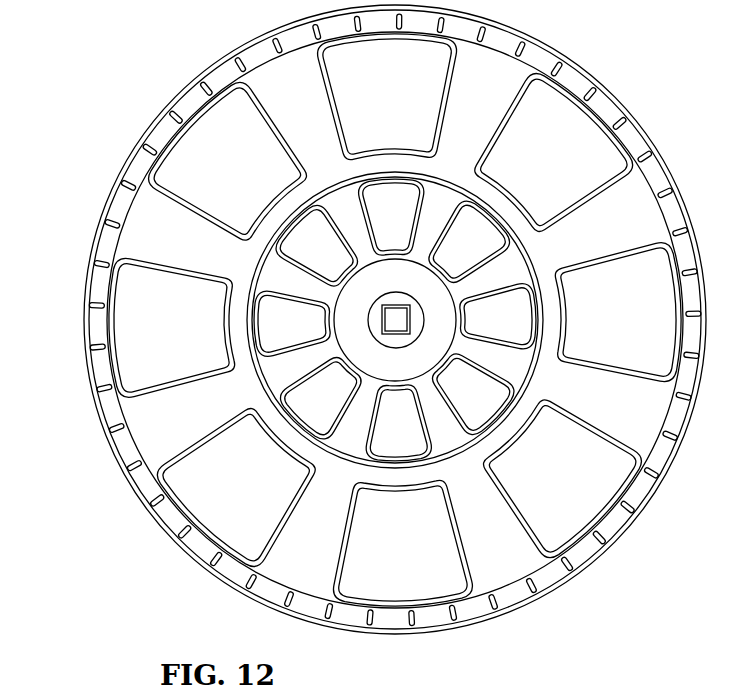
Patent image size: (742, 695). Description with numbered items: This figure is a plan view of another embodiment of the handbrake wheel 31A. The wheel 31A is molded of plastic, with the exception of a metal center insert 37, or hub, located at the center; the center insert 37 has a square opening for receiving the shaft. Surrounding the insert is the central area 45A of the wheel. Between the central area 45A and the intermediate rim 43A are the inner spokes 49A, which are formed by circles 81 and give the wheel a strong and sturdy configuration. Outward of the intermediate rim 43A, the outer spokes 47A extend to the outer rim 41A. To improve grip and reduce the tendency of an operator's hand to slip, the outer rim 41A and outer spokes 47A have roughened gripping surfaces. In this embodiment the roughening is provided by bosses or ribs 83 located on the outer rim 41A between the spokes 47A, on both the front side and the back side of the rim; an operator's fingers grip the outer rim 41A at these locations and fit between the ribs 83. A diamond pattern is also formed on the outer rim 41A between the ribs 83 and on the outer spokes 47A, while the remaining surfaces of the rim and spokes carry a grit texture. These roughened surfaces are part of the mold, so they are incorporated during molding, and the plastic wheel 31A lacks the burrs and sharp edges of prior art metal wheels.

The wheel 31A is at (588, 68).
The outer rim 41A is at (183, 552).
The ribs 83 is at (668, 432).
The outer spokes 47A is at (508, 573).
The intermediate rim 43A is at (452, 443).
The circles 81 is at (303, 232).
The inner spokes 49A is at (273, 373).
The central area 45A is at (445, 334).
The center insert 37 is at (370, 318).